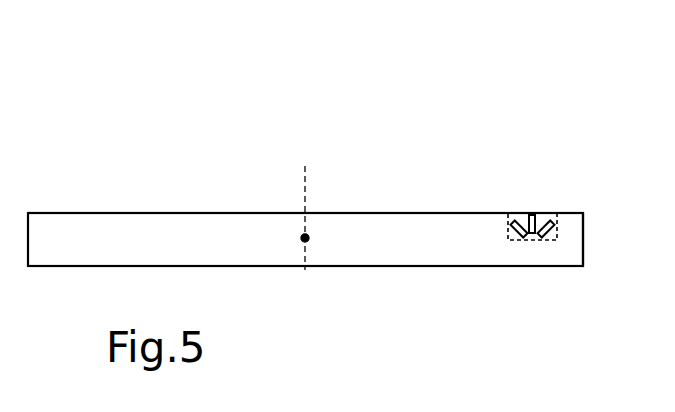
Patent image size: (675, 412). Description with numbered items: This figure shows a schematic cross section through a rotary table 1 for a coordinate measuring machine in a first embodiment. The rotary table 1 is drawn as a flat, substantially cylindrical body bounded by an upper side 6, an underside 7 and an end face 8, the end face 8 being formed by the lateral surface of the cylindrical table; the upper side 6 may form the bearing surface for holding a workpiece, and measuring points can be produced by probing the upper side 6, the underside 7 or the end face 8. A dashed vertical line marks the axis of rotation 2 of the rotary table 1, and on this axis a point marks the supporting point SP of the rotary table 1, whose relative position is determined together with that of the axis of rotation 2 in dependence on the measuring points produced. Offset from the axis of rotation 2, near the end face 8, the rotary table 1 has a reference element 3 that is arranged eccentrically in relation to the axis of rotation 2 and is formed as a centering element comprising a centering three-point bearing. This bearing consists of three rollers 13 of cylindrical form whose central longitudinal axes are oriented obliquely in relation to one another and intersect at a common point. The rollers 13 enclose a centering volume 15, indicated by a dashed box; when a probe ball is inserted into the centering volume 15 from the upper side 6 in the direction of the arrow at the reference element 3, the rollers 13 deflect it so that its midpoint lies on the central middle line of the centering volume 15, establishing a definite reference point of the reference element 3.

The rotary table 1 is at (483, 252).
The axis of rotation 2 is at (305, 168).
The reference element 3 is at (533, 194).
The upper side 6 is at (440, 212).
The underside 7 is at (432, 268).
The end face 8 is at (585, 236).
The rollers 13 is at (517, 244).
The centering volume 15 is at (544, 212).
The supporting point SP is at (309, 238).